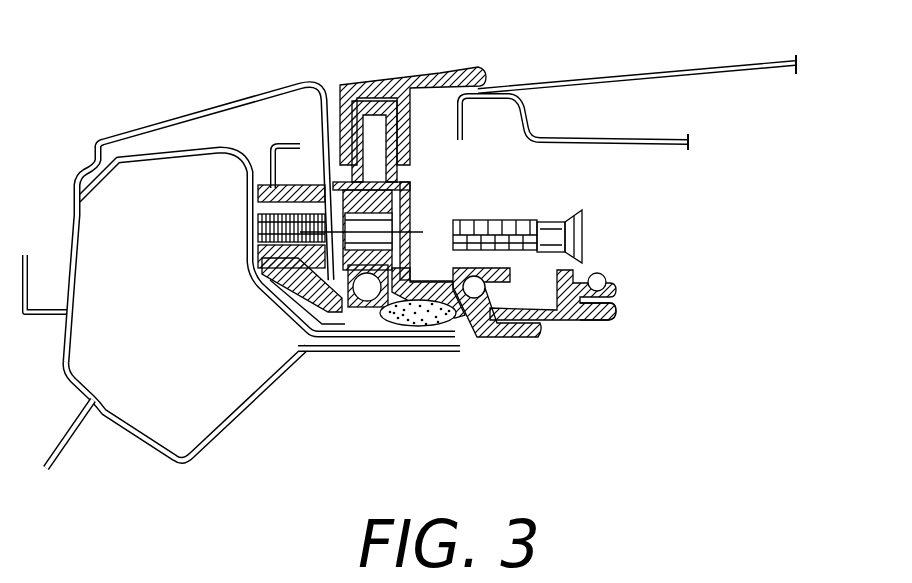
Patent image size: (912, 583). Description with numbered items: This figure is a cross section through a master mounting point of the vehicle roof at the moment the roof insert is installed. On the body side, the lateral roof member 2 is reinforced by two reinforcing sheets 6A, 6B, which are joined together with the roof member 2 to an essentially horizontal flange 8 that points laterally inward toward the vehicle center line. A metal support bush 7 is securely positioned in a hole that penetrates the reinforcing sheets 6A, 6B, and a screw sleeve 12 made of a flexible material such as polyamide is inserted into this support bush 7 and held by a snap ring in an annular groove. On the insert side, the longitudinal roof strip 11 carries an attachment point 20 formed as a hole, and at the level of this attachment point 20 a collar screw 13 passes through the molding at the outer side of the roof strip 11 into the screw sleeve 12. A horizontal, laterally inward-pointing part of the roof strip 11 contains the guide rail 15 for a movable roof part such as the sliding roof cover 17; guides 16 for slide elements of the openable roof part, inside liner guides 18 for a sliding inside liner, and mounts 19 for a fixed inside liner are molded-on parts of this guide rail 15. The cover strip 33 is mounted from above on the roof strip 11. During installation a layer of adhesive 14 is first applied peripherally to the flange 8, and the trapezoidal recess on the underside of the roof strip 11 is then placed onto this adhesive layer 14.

The roof member 2 is at (203, 382).
The reinforcing sheet 6A is at (163, 120).
The reinforcing sheet 6B is at (272, 148).
The support bush 7 is at (268, 297).
The flange 8 is at (389, 352).
The longitudinal roof strip 11 is at (410, 193).
The screw sleeve 12 is at (262, 208).
The collar screw 13 is at (583, 227).
The layer of adhesive 14 is at (433, 337).
The guide rail 15 is at (562, 315).
The guides 16 is at (517, 293).
The sliding roof cover 17 is at (642, 70).
The inside liner guides 18 is at (588, 283).
The mounts 19 is at (600, 300).
The attachment point 20 is at (375, 238).
The cover strip 33 is at (412, 76).